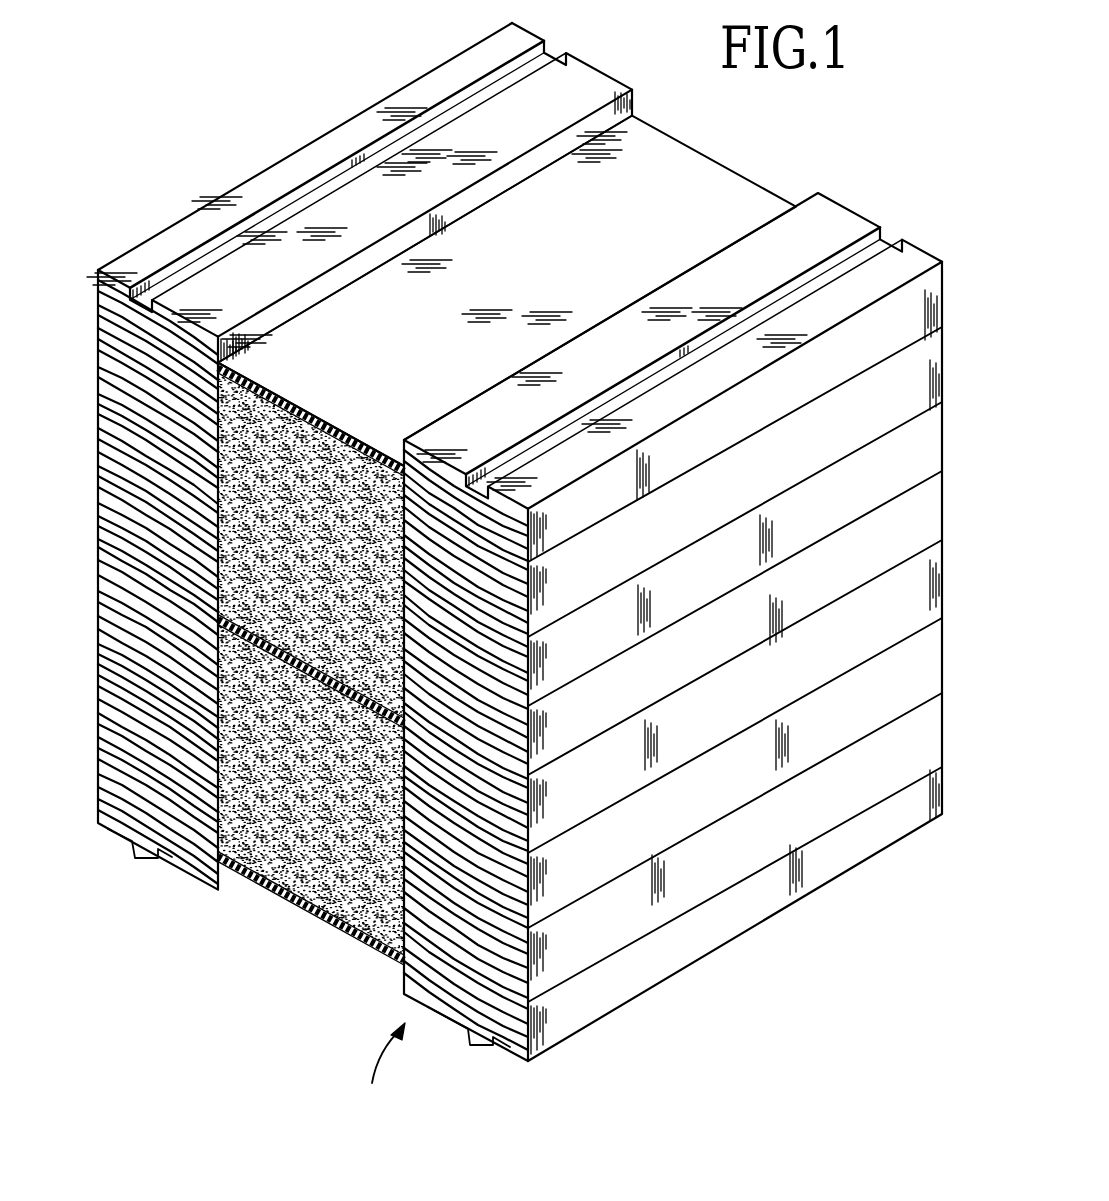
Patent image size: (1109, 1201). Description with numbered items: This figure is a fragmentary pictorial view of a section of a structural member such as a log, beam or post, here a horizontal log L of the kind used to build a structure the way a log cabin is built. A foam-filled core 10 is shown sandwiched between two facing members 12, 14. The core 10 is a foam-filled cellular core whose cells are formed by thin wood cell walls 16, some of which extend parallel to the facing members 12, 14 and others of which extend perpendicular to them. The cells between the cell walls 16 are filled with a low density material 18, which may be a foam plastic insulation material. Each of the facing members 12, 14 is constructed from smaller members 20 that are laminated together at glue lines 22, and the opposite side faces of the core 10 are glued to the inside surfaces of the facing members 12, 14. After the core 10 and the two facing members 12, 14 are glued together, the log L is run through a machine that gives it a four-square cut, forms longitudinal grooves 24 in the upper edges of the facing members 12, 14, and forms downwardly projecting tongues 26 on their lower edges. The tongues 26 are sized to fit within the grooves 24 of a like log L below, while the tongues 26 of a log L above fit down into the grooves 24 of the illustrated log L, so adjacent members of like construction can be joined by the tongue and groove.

The foam-filled core 10 is at (408, 343).
The facing member 12 is at (348, 226).
The facing member 14 is at (600, 363).
The thin wood cell walls 16 is at (698, 180).
The low density material 18 is at (336, 470).
The smaller members 20 is at (100, 280).
The glue lines 22 is at (102, 346).
The longitudinal grooves 24 is at (380, 146).
The downwardly projecting tongues 26 is at (150, 860).
The log L is at (378, 1060).